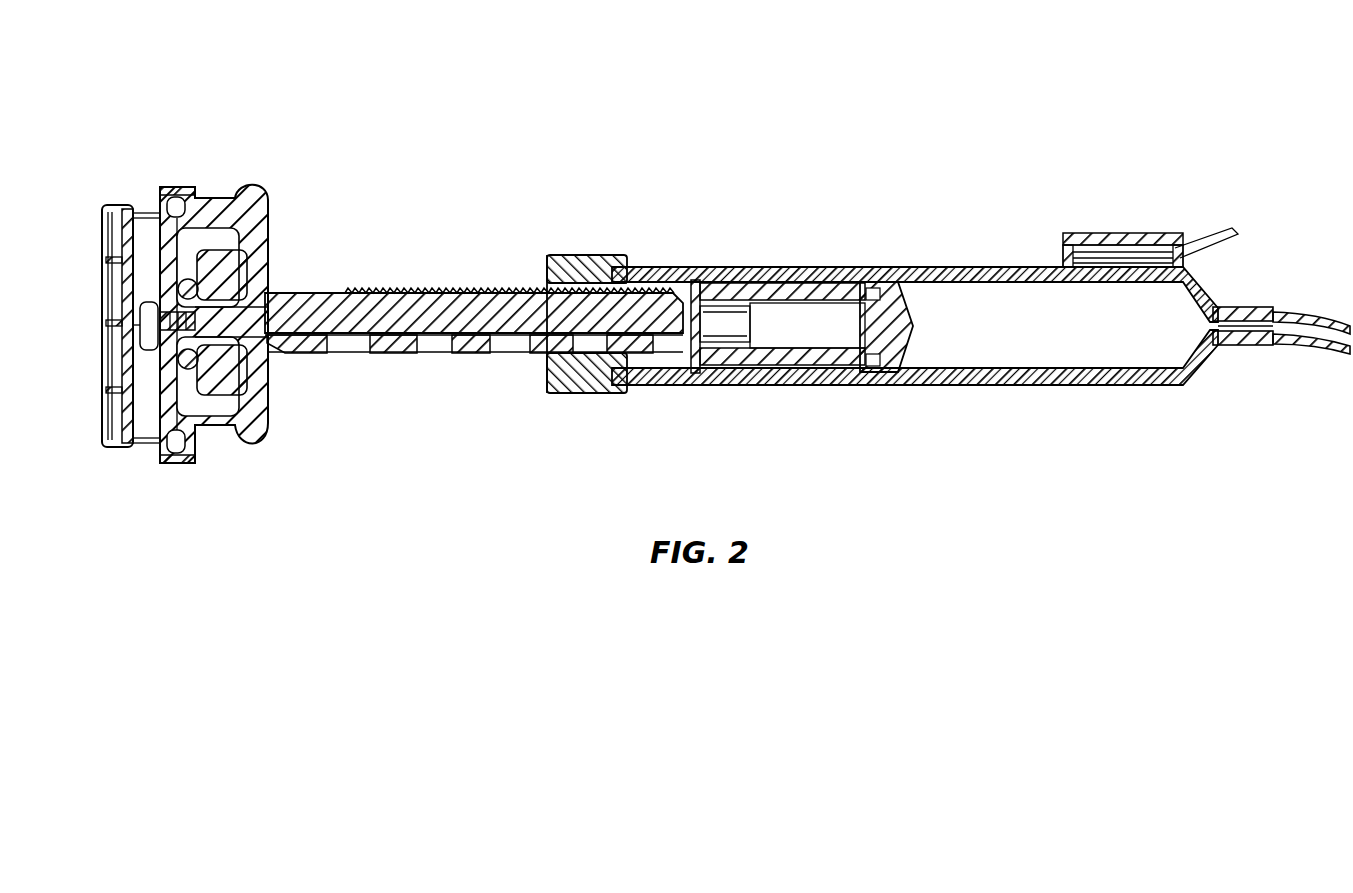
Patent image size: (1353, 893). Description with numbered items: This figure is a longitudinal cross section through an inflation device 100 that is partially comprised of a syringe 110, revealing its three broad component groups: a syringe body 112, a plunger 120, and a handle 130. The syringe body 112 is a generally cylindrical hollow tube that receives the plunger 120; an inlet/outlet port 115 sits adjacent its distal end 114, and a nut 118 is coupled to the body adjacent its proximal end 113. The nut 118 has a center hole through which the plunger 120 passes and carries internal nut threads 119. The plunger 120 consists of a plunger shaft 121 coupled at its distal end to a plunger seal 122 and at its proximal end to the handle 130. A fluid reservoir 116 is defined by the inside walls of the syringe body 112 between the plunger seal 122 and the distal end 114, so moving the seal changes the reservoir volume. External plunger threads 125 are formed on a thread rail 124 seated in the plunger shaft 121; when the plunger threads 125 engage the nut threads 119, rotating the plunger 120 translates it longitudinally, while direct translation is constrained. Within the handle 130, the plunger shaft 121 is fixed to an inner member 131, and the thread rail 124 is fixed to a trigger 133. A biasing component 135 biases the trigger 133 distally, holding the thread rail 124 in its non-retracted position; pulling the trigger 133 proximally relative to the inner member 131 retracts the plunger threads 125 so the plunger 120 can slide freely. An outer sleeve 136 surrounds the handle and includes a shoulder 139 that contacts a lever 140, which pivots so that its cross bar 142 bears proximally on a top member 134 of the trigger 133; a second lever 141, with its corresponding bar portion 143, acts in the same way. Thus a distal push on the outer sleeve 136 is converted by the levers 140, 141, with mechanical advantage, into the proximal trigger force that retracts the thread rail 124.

The inflation device 100 is at (705, 148).
The syringe 110 is at (605, 228).
The syringe body 112 is at (878, 387).
The proximal end 113 is at (545, 383).
The distal end 114 is at (1208, 284).
The inlet/outlet port 115 is at (1275, 336).
The fluid reservoir 116 is at (1088, 345).
The nut 118 is at (572, 393).
The nut threads 119 is at (548, 287).
The plunger 120 is at (354, 362).
The plunger shaft 121 is at (697, 300).
The plunger seal 122 is at (893, 292).
The thread rail 124 is at (350, 332).
The plunger threads 125 is at (412, 293).
The handle 130 is at (203, 142).
The inner member 131 is at (137, 213).
The trigger 133 is at (266, 218).
The top member 134 is at (162, 262).
The biasing component 135 is at (158, 388).
The outer sleeve 136 is at (107, 348).
The shoulder 139 is at (160, 200).
The lever 140 is at (190, 207).
The lever 141 is at (195, 446).
The cross bar 142 is at (200, 284).
The lower channel 143 is at (200, 373).